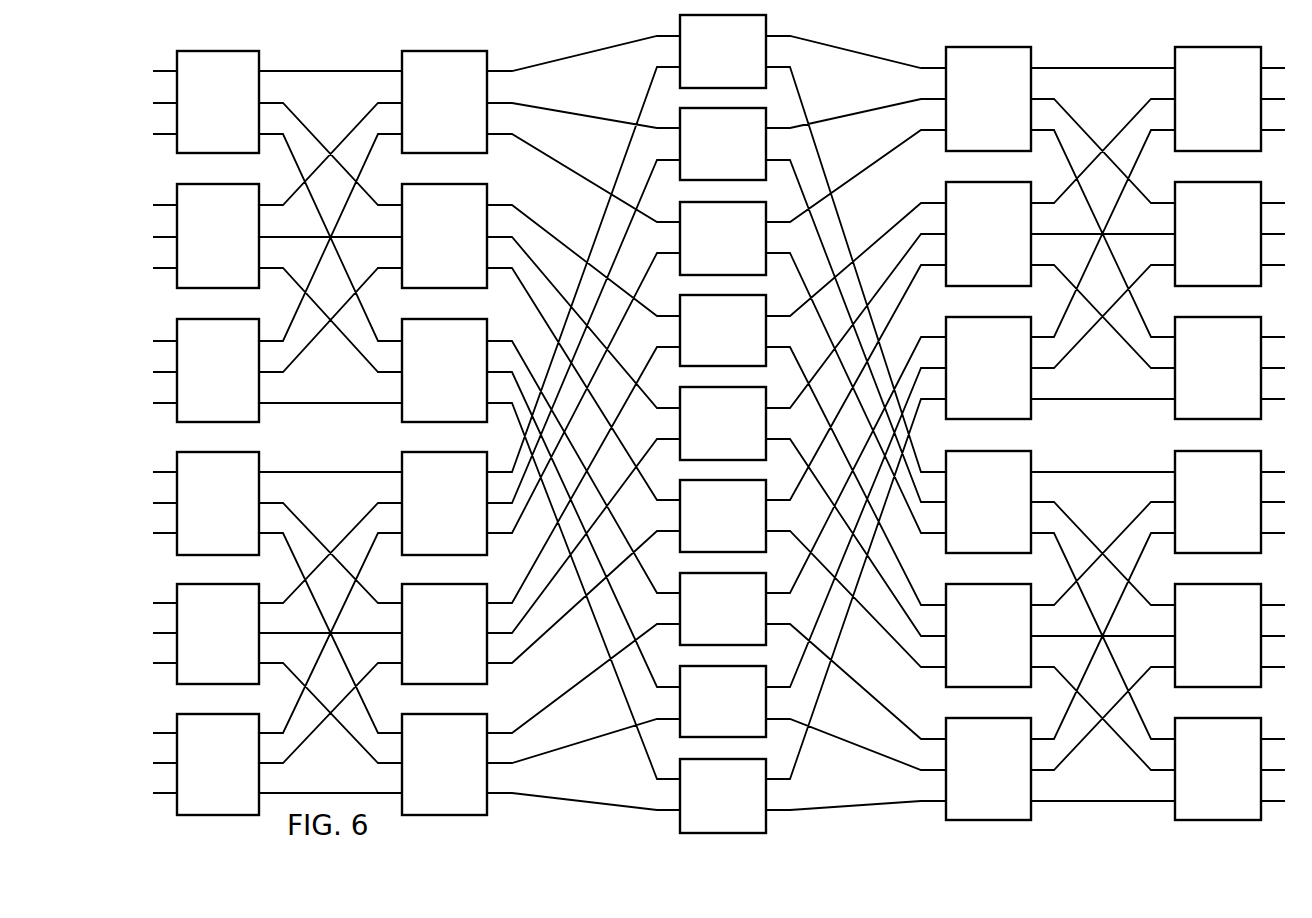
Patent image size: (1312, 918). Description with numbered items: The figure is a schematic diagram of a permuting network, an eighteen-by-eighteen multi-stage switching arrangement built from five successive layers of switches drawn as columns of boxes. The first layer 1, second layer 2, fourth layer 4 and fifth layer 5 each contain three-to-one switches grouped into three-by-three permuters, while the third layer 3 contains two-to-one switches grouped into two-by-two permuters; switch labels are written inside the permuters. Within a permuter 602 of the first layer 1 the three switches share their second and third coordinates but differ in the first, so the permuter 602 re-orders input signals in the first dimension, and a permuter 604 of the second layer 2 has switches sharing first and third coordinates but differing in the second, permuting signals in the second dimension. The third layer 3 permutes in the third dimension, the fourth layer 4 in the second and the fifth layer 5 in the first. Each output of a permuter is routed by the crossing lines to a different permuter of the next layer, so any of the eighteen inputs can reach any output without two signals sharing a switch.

The permuter 602 is at (177, 154).
The permuter 604 is at (458, 153).
The layer L1 1 is at (190, 448).
The layer L2 2 is at (470, 448).
The layer L3 3 is at (723, 438).
The layer L4 4 is at (988, 450).
The layer L5 5 is at (1218, 450).